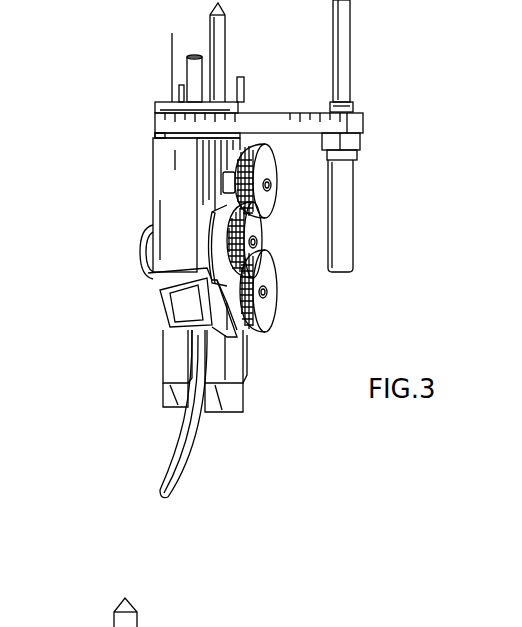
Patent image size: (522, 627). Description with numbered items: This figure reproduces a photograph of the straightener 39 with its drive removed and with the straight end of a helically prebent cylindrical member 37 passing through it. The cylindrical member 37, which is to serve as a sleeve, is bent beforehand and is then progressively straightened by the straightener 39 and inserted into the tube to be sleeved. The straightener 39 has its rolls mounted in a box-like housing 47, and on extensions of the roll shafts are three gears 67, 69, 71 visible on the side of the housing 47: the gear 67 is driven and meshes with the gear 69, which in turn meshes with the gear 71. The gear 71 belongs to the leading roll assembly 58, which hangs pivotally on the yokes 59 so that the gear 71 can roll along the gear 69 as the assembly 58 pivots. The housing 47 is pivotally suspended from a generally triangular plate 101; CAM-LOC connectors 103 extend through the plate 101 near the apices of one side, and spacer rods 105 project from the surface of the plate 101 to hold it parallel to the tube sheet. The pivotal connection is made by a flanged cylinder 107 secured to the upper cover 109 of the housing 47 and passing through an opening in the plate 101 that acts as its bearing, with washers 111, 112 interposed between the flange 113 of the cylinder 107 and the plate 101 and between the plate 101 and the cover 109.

The cylindrical member 37 is at (183, 446).
The straightener 39 is at (133, 243).
The housing 47 is at (173, 205).
The leading roll assembly 58 is at (200, 308).
The yoke 59 is at (212, 272).
The gear 67 is at (272, 198).
The gear 69 is at (262, 232).
The gear 71 is at (273, 311).
The plate 101 is at (278, 114).
The CAM-LOC connector 103 is at (226, 17).
The spacer rod 105 is at (180, 86).
The flanged cylinder 107 is at (152, 96).
The upper cover 109 is at (160, 151).
The washer 111 is at (172, 108).
The washer 112 is at (156, 134).
The flange 113 is at (180, 56).